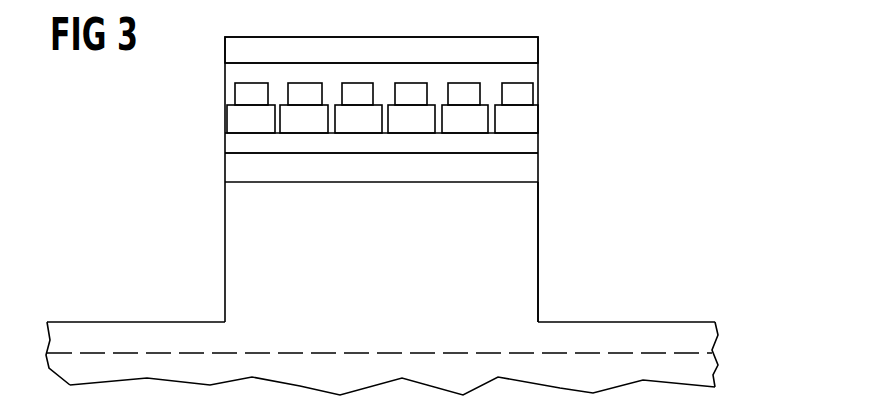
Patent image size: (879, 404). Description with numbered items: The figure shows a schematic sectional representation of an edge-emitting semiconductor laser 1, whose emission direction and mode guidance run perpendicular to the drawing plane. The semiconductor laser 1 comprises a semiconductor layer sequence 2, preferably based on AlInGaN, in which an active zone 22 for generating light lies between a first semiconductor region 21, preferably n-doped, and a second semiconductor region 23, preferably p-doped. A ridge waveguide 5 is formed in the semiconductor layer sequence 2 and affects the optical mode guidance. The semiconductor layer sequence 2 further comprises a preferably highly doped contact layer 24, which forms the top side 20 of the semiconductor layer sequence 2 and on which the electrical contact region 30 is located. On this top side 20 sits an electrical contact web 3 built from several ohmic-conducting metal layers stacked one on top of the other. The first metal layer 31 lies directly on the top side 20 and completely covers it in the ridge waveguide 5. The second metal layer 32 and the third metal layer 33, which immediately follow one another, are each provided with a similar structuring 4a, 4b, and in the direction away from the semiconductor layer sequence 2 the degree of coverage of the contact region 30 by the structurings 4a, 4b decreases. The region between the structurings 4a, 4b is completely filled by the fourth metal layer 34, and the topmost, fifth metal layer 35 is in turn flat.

The semiconductor laser 1 is at (701, 83).
The semiconductor layer sequence 2 is at (425, 277).
The electrical contact web 3 is at (386, 107).
The structuring 4a is at (524, 123).
The structuring 4b is at (524, 94).
The ridge waveguide 5 is at (540, 265).
The top side 20 is at (381, 193).
The first semiconductor region 21 is at (422, 382).
The active zone 22 is at (702, 352).
The second semiconductor region 23 is at (703, 335).
The contact layer 24 is at (525, 172).
The electrical contact region 30 is at (443, 158).
The first metal layer 31 is at (525, 147).
The second metal layer 32 is at (429, 126).
The third metal layer 33 is at (435, 95).
The fourth metal layer 34 is at (401, 103).
The fifth metal layer 35 is at (528, 56).